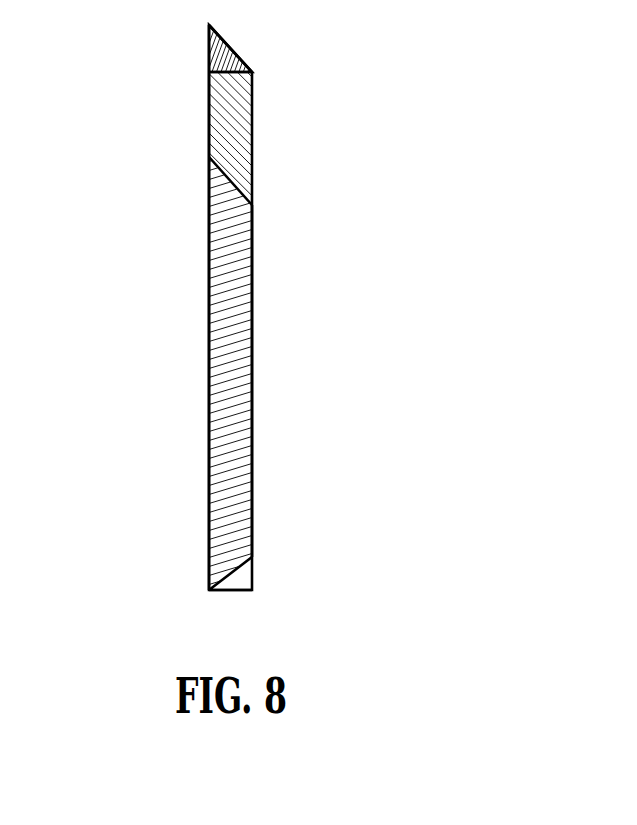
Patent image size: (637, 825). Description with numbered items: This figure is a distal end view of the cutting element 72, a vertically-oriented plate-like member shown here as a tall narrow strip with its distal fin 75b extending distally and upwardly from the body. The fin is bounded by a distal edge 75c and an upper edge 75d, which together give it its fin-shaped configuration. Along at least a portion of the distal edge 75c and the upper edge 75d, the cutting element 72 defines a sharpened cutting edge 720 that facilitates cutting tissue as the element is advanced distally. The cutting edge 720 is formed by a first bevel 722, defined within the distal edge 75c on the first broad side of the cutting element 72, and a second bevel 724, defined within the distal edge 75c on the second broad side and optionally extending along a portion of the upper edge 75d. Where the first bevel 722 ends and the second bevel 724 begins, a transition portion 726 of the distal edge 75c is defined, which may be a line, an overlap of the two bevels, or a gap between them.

The cutting element 72 is at (183, 512).
The sharpened cutting edge 720 is at (158, 397).
The first bevel 722 is at (242, 435).
The second bevel 724 is at (240, 125).
The transition portion 726 is at (263, 167).
The distal fin 75b is at (275, 529).
The distal edge 75c is at (242, 302).
The upper edge 75d is at (223, 57).